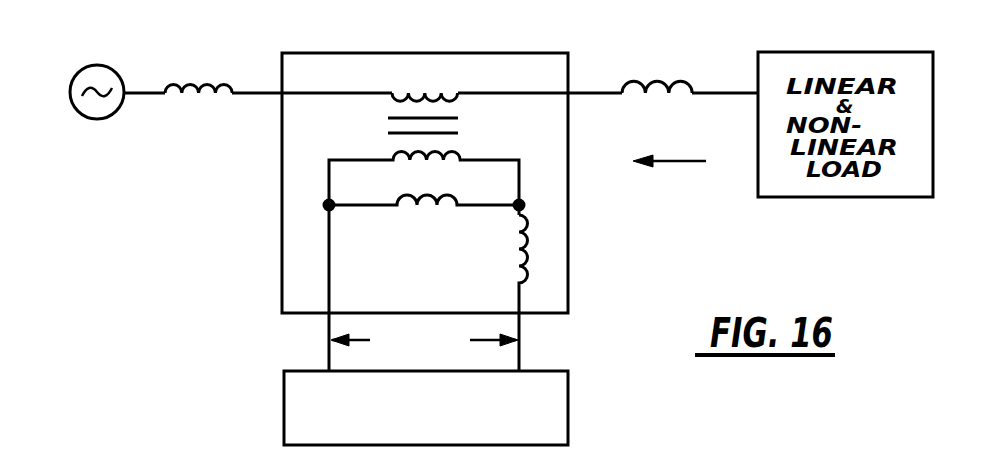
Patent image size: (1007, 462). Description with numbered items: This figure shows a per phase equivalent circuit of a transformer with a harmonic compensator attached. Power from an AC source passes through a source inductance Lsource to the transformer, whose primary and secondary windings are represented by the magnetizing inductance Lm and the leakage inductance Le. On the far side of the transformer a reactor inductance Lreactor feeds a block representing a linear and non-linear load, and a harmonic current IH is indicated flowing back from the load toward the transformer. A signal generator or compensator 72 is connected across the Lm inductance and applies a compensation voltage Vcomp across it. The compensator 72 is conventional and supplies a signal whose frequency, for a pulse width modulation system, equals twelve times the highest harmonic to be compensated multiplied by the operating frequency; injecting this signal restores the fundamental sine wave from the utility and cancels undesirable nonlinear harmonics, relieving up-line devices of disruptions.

The compensator 72 is at (568, 378).
The source inductance Lsource is at (202, 117).
The magnetizing inductance Lm is at (424, 217).
The leakage inductance Le is at (502, 293).
The reactor inductance Lreactor is at (673, 110).
The harmonic current IH is at (669, 176).
The compensation voltage Vcomp is at (424, 342).